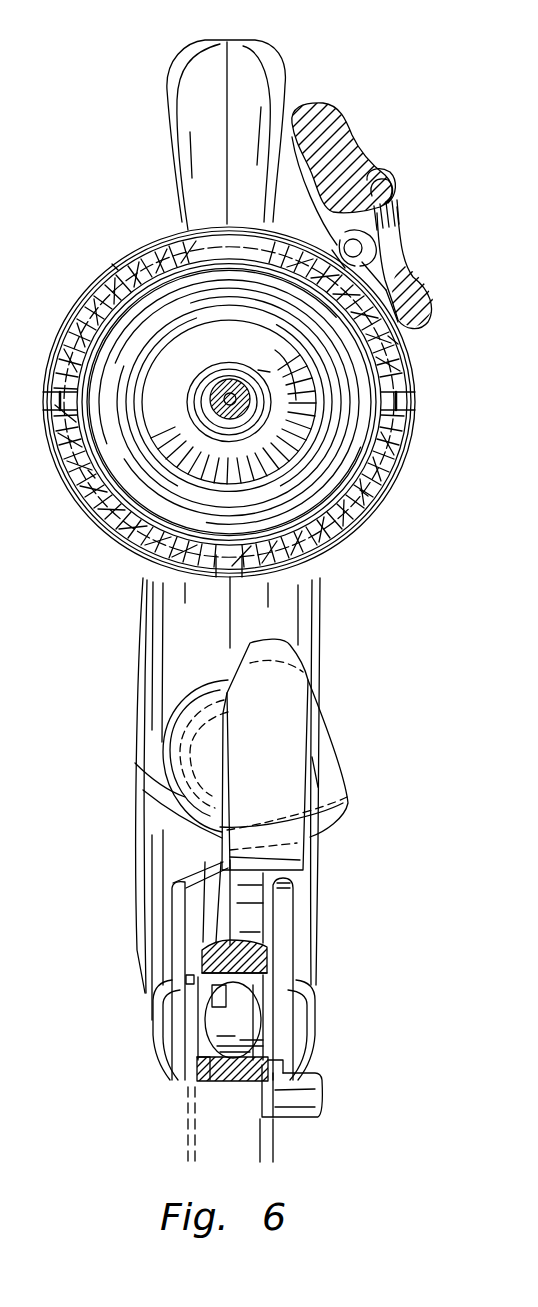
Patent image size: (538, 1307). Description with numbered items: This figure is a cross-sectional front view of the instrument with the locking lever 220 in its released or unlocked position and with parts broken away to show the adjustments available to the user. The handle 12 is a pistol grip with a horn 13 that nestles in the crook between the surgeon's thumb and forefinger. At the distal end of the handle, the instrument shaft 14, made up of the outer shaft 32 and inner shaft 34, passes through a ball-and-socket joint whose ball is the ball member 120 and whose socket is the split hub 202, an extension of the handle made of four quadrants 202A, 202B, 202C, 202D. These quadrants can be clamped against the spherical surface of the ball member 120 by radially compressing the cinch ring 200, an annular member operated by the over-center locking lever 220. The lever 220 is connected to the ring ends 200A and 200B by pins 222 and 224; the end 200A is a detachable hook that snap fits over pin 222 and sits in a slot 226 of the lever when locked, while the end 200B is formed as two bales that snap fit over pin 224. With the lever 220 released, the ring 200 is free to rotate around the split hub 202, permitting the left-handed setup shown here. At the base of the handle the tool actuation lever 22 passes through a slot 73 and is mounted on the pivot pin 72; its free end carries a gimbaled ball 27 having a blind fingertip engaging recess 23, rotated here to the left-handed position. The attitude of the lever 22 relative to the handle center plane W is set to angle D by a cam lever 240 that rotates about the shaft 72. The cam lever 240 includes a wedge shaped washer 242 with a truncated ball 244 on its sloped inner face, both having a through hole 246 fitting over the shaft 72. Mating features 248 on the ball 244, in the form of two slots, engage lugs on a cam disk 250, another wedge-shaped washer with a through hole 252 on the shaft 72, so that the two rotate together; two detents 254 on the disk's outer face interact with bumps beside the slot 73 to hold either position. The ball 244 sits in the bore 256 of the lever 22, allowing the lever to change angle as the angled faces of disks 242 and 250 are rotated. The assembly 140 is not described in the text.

The horn 13 is at (215, 46).
The actuator assembly 140 is at (371, 84).
The over-center locking lever 220 is at (313, 105).
The end of cinch ring 200B is at (368, 166).
The pin 224 is at (392, 171).
The slot 226 is at (398, 207).
The pin 222 is at (364, 249).
The end of cinch ring 200A is at (397, 252).
The cinch ring 200 is at (121, 262).
The ball member 120 is at (152, 240).
The split hub 202 is at (93, 287).
The quadrant 202A is at (163, 250).
The quadrant 202B is at (372, 350).
The quadrant 202C is at (373, 480).
The quadrant 202D is at (88, 470).
The inner shaft 34 is at (218, 393).
The outer shaft 32 is at (222, 386).
The instrument shaft 14 is at (237, 385).
The handle 12 is at (113, 623).
The center line or center plane W is at (232, 610).
The gimbaled ball 27 is at (168, 718).
The fingertip engaging recess 23 is at (173, 722).
The slot 73 is at (185, 896).
The tool actuation lever 22 is at (262, 913).
The truncated ball 244 is at (263, 967).
The through hole 246 is at (313, 1016).
The detents 254 is at (190, 980).
The cam disk 250 is at (215, 1030).
The mating features 248 is at (210, 1000).
The through hole 252 is at (200, 1047).
The bore 256 is at (177, 1082).
The wedge shaped washer 242 is at (272, 1063).
The cam lever 240 is at (323, 1091).
The pivot pin 72 is at (229, 1090).
The angle D is at (230, 1150).